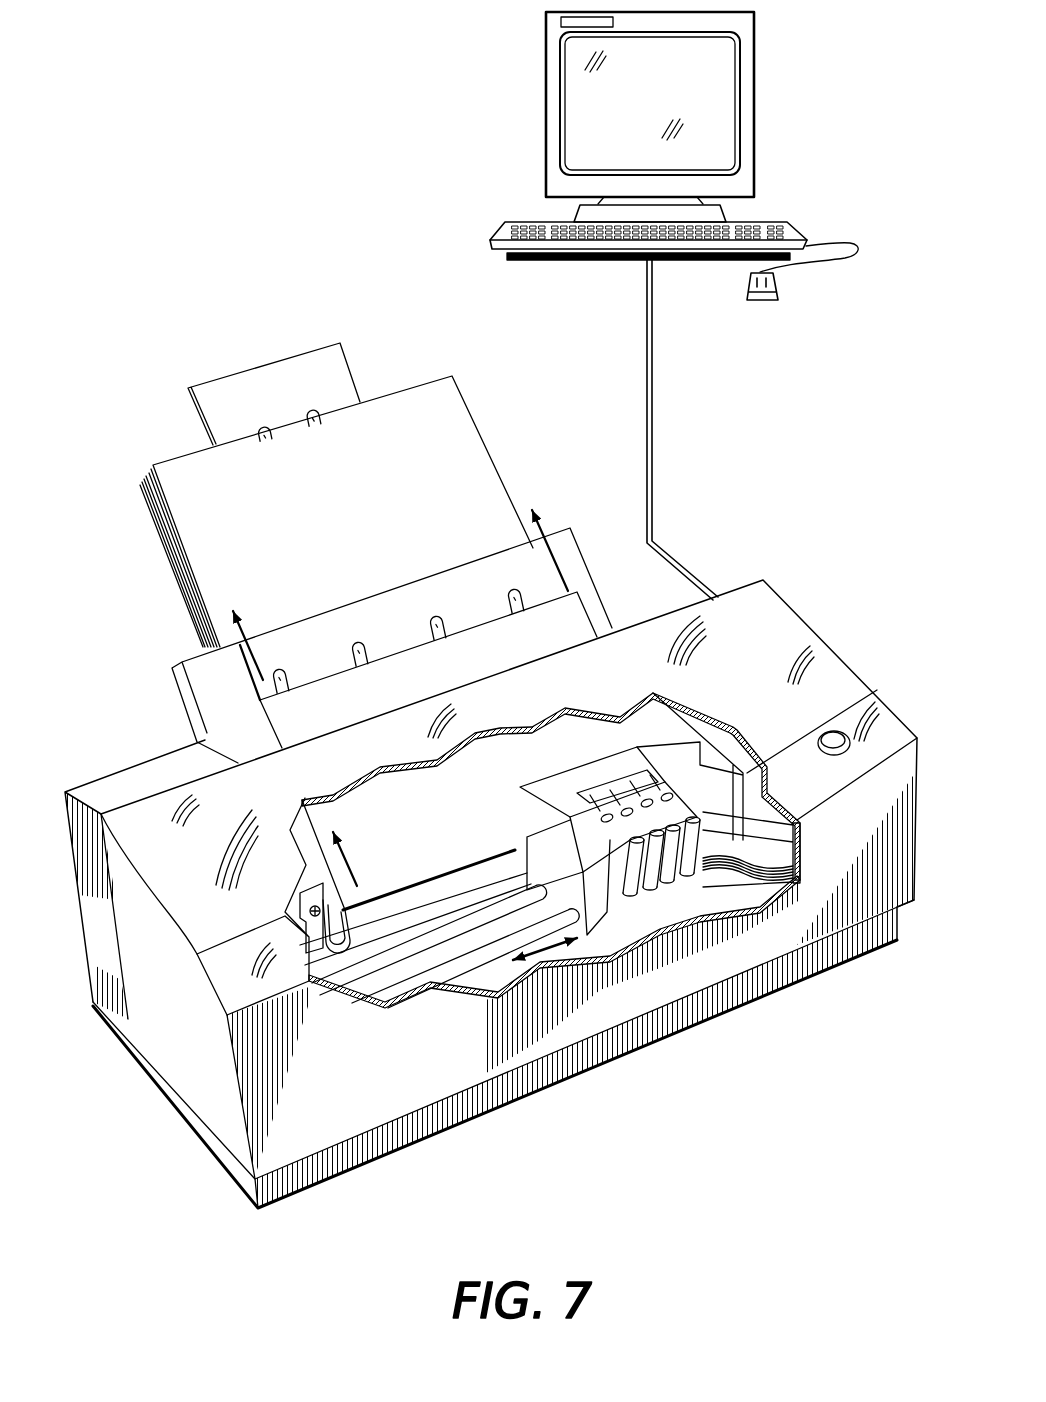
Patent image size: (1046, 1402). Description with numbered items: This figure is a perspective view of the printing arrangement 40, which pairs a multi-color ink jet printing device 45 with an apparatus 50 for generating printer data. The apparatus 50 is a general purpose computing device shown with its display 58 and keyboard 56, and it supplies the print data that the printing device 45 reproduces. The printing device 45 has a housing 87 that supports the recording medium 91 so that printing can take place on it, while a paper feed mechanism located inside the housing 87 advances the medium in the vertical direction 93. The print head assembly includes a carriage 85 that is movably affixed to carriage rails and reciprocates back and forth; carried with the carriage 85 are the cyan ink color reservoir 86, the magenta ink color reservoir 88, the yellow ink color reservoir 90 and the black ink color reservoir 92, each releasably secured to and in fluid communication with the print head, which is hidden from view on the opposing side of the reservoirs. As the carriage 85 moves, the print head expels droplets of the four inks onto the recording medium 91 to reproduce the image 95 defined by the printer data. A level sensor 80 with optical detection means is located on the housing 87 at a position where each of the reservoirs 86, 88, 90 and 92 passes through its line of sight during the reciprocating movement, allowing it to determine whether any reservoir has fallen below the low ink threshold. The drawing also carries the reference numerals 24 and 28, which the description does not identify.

The printing arrangement 40 is at (310, 115).
The printer data generating apparatus 50 is at (538, 104).
The display 58 is at (753, 116).
The keyboard 56 is at (787, 231).
The multi-color ink jet printing device 45 is at (548, 408).
The recording medium 91 is at (572, 615).
The housing 87 is at (810, 616).
The vertical direction 93 is at (353, 866).
The level sensor 80 is at (312, 908).
The guide rods 24 is at (487, 945).
The carriage guide rail 28 is at (547, 948).
The image 95 is at (513, 820).
The carriage 85 is at (608, 920).
The cyan ink color reservoir 86 is at (637, 890).
The magenta ink color reservoir 88 is at (653, 882).
The yellow ink color reservoir 90 is at (673, 875).
The black ink color reservoir 92 is at (692, 865).